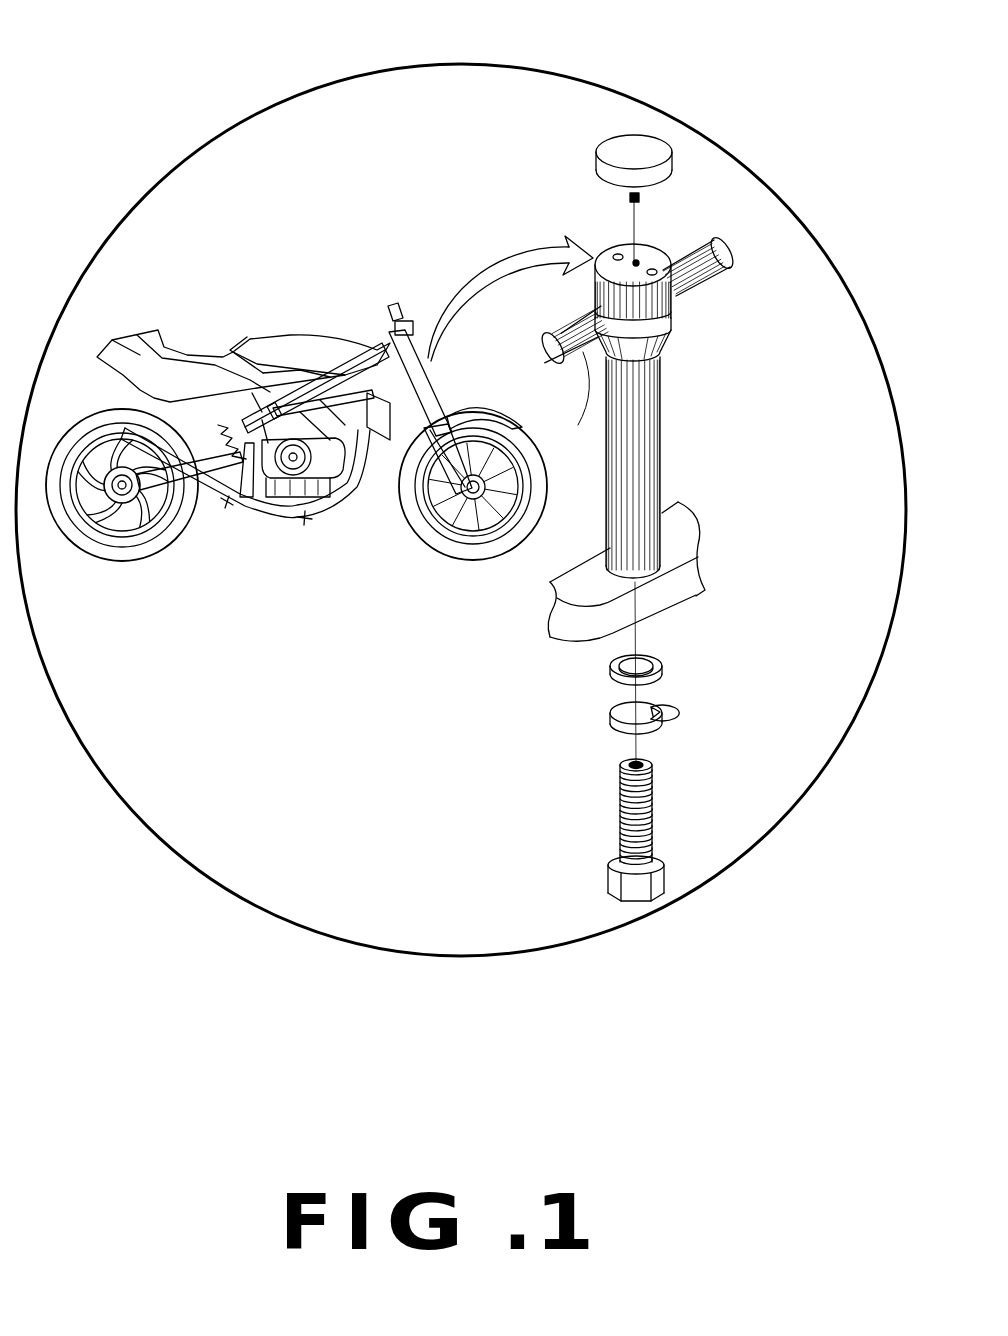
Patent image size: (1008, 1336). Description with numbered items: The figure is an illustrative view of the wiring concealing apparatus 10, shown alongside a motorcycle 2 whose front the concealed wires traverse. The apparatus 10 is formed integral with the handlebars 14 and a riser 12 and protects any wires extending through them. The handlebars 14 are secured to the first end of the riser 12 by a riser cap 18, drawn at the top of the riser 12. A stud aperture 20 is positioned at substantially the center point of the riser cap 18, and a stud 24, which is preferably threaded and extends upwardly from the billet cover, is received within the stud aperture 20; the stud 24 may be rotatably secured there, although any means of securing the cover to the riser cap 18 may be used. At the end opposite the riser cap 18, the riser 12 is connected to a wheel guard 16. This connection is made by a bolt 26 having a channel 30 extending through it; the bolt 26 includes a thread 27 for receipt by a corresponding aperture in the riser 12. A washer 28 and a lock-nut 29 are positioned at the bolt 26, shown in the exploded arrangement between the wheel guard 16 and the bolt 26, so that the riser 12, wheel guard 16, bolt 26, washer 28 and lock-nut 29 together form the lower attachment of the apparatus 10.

The motorcycle 2 is at (292, 535).
The wiring concealing apparatus 10 is at (660, 500).
The riser 12 is at (617, 143).
The handlebars 14 is at (703, 283).
The wheel guard 16 is at (703, 591).
The riser cap 18 is at (673, 249).
The stud aperture 20 is at (637, 262).
The stud 24 is at (630, 192).
The bolt 26 is at (665, 860).
The thread 27 is at (652, 805).
The washer 28 is at (609, 672).
The lock-nut 29 is at (608, 720).
The channel 30 is at (647, 767).